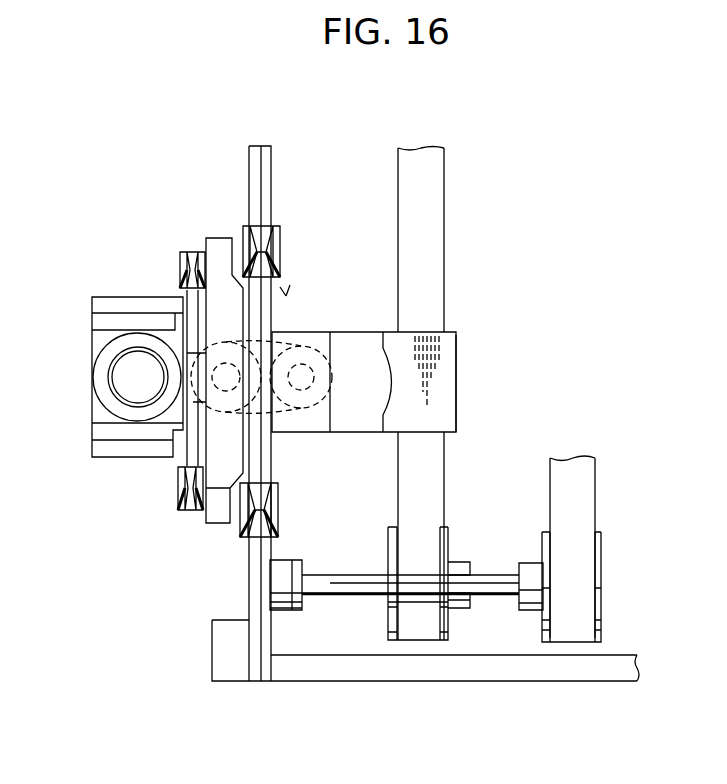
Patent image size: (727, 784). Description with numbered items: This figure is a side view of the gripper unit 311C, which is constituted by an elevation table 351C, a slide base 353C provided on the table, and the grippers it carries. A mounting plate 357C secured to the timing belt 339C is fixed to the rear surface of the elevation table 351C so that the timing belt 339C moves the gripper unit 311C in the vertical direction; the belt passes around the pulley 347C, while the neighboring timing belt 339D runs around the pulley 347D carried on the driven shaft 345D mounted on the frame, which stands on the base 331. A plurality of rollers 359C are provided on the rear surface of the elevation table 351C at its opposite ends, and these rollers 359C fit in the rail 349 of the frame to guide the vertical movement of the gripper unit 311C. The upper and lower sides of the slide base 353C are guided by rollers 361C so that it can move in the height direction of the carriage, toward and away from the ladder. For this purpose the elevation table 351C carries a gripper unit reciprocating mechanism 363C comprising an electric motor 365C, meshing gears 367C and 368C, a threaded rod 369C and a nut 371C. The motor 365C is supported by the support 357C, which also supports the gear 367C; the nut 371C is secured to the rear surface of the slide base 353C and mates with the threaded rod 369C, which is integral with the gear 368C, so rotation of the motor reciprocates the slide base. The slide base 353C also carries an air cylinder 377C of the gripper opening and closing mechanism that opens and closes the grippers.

The gripper unit 311C is at (93, 283).
The base 331 is at (426, 685).
The timing belt 339C is at (445, 262).
The timing belt 339D is at (596, 505).
The driven shaft 345D is at (508, 574).
The pulley 347C is at (390, 619).
The pulley 347D is at (602, 606).
The rail 349 is at (246, 597).
The elevation table 351C is at (210, 445).
The slide base 353C is at (188, 312).
The mounting plate 357C is at (458, 400).
The rollers 359C is at (248, 228).
The rollers 361C is at (184, 252).
The gripper unit reciprocating mechanism 363C is at (287, 295).
The electric motor 365C is at (301, 377).
The gear 367C is at (329, 346).
The gear 368C is at (259, 333).
The threaded rod 369C is at (233, 383).
The nut 371C is at (245, 400).
The air cylinder 377C is at (121, 375).